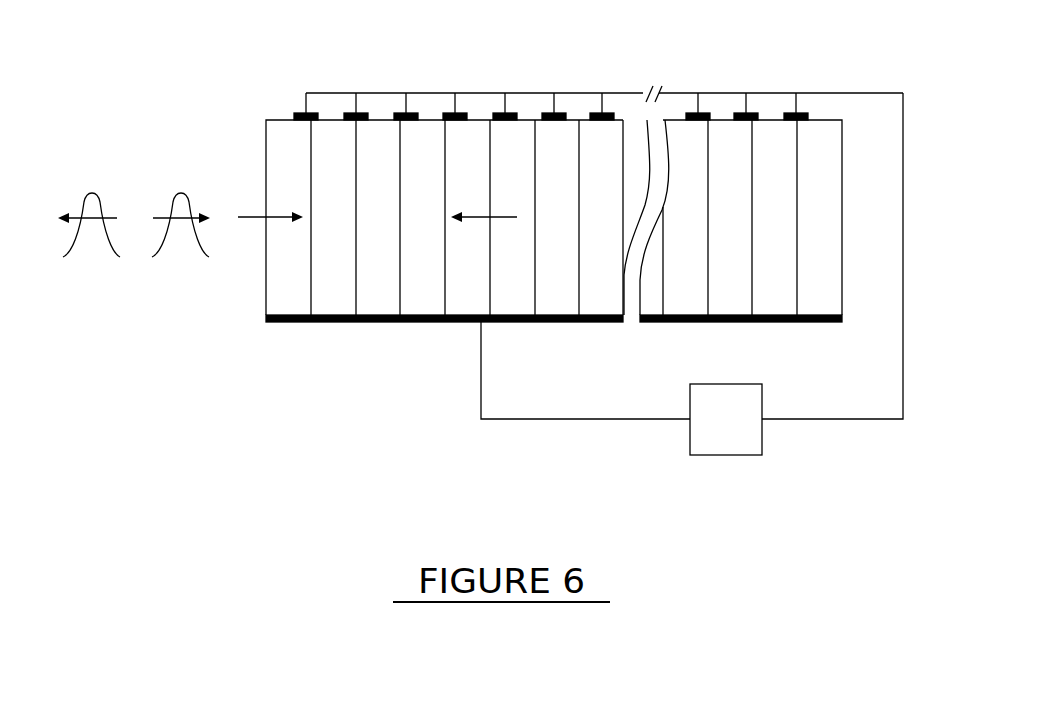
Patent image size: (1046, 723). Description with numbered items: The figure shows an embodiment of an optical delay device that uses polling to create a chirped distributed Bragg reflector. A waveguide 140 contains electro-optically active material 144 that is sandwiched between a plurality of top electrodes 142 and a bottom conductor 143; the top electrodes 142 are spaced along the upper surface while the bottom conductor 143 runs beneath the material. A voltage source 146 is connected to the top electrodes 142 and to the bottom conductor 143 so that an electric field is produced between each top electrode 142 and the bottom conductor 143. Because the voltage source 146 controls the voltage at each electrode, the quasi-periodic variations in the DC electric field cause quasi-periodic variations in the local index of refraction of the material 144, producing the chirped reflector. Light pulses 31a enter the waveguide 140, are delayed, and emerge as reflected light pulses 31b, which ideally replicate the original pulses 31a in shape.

The waveguide 140 is at (257, 48).
The top electrodes 142 is at (403, 87).
The bottom conductor 143 is at (423, 322).
The electro-optically active material 144 is at (335, 283).
The voltage source 146 is at (740, 455).
The light pulses 31a is at (175, 190).
The reflected light pulses 31b is at (87, 190).